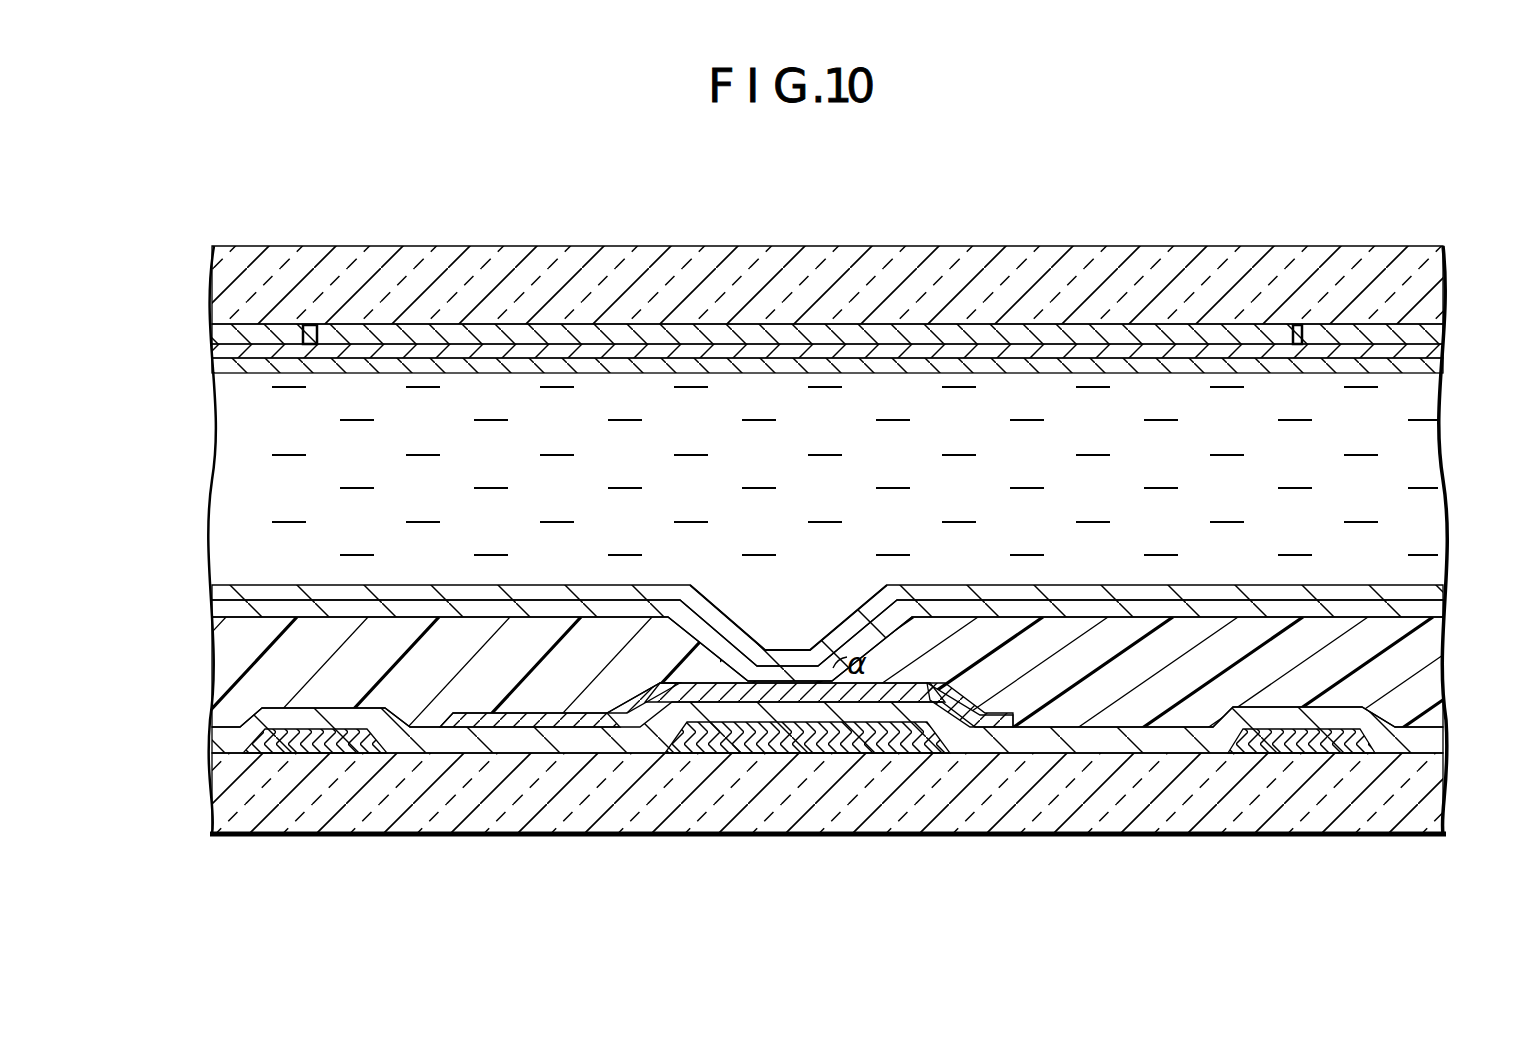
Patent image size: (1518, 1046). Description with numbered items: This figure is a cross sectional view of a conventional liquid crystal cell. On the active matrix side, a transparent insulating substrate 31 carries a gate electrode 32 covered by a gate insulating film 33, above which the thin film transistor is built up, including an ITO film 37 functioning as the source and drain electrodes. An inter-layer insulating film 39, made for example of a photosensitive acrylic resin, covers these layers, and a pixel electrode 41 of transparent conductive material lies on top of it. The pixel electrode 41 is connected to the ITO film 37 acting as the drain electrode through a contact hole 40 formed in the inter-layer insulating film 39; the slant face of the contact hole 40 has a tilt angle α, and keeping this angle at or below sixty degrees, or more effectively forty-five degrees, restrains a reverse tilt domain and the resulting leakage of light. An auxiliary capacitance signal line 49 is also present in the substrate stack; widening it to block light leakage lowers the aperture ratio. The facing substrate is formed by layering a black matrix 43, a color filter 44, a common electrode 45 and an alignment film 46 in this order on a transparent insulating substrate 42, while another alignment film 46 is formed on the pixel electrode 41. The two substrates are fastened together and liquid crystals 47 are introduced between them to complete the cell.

The transparent insulating substrate 31 is at (975, 800).
The gate electrode 32 is at (327, 750).
The gate insulating film 33 is at (558, 740).
The ITO film 37 is at (605, 718).
The inter-layer insulating film 39 is at (425, 688).
The contact hole 40 is at (792, 602).
The pixel electrode 41 is at (1112, 603).
The transparent insulating substrate 42 is at (946, 258).
The black matrix 43 is at (1352, 330).
The color filter 44 is at (640, 340).
The common electrode 45 is at (447, 347).
The alignment film 46 is at (1425, 598).
The liquid crystals 47 is at (258, 418).
The auxiliary capacitance signal line 49 is at (798, 745).